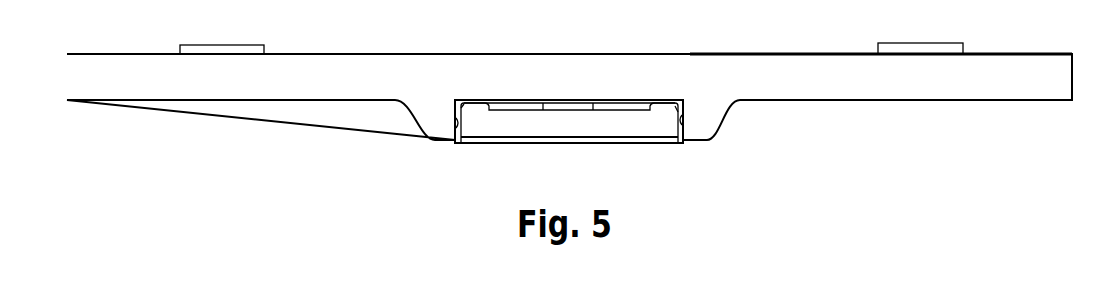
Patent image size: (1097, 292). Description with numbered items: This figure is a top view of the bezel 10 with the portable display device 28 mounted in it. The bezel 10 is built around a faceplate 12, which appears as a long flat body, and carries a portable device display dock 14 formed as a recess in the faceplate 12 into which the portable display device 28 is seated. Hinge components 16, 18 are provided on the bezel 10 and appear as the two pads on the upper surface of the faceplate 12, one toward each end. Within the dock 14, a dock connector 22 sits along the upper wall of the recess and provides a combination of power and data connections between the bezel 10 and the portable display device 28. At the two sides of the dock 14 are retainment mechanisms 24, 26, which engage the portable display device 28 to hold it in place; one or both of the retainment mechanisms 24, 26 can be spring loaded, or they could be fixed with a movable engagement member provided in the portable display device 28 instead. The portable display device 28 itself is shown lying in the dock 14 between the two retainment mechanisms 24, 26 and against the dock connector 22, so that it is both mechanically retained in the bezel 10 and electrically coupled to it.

The bezel 10 is at (120, 202).
The faceplate 12 is at (277, 100).
The portable device display dock 14 is at (633, 103).
The hinge component 16 is at (222, 45).
The hinge component 18 is at (918, 43).
The dock connector 22 is at (572, 102).
The retainment mechanism 24 is at (680, 120).
The retainment mechanism 26 is at (461, 108).
The portable display device 28 is at (562, 145).